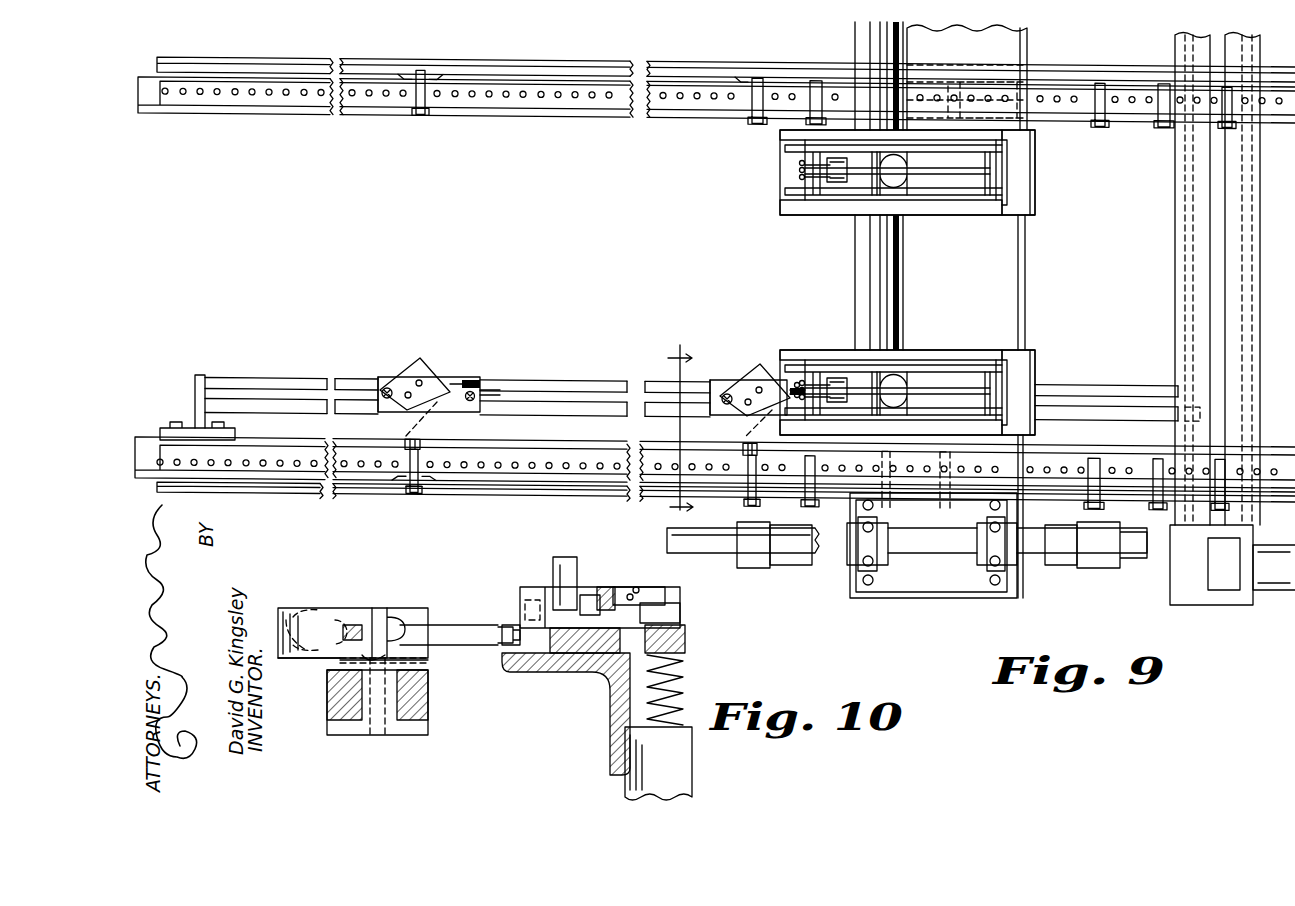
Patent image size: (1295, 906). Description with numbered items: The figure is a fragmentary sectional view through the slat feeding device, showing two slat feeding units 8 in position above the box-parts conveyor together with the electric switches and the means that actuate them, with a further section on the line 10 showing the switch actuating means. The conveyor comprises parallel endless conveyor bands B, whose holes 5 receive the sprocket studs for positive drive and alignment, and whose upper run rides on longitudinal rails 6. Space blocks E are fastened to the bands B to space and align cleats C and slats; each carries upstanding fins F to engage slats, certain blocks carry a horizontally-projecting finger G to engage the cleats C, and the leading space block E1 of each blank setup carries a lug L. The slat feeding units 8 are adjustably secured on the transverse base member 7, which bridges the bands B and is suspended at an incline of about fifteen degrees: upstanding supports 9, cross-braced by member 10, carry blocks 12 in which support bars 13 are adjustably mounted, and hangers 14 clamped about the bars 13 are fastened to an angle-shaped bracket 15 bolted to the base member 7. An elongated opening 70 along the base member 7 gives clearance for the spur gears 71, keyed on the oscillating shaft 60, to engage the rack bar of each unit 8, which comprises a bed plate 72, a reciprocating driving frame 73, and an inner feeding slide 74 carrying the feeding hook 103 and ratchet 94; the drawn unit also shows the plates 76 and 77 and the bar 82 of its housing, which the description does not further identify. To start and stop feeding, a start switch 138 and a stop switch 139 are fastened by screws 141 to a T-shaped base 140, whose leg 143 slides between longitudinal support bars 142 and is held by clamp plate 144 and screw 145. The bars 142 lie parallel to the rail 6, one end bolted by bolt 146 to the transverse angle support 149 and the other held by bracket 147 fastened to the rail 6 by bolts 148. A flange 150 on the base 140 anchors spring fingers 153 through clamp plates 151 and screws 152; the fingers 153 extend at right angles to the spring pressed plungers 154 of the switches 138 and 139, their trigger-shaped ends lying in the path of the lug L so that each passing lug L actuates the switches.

In FIG. 9, the holes 5 is at (508, 96).
In FIG. 9, the longitudinal rails 6 is at (660, 116).
In FIG. 10, the longitudinal rails 6 is at (522, 672).
In FIG. 9, the transverse base member 7 is at (1026, 278).
In FIG. 9, the slat feeding unit 8 is at (1036, 182).
In FIG. 9, the upstanding supports 9 is at (755, 570).
In FIG. 9, the cross-brace member 10 is at (685, 430).
In FIG. 9, the blocks 12 is at (792, 567).
In FIG. 9, the support bars 13 is at (705, 548).
In FIG. 9, the hangers 14 is at (978, 560).
In FIG. 9, the angle-shaped bracket 15 is at (932, 593).
In FIG. 9, the shaft 60 is at (884, 294).
In FIG. 9, the elongated opening 70 is at (868, 275).
In FIG. 9, the spur gears 71 is at (845, 200).
In FIG. 9, the bed plate 72 is at (1030, 205).
In FIG. 9, the reciprocating driving frame 73 is at (996, 208).
In FIG. 9, the inner feeding slide 74 is at (975, 190).
In FIG. 9, the plate 76 is at (781, 135).
In FIG. 9, the plate 77 is at (786, 148).
In FIG. 9, the bar 82 is at (1008, 150).
In FIG. 9, the ratchet 94 is at (860, 190).
In FIG. 9, the feeding hook 103 is at (908, 180).
In FIG. 9, the start switch 138 is at (750, 376).
In FIG. 10, the start switch 138 is at (412, 610).
In FIG. 9, the stop switch 139 is at (420, 366).
In FIG. 9, the T-shaped base 140 is at (380, 395).
In FIG. 10, the T-shaped base 140 is at (332, 670).
In FIG. 9, the screws 141 is at (418, 382).
In FIG. 10, the screws 141 is at (385, 610).
In FIG. 9, the longitudinal support bars 142 is at (590, 404).
In FIG. 10, the leg 143 is at (388, 718).
In FIG. 10, the clamp plate 144 is at (428, 728).
In FIG. 9, the screw 145 is at (470, 402).
In FIG. 10, the screw 145 is at (400, 666).
In FIG. 9, the bolt 146 is at (1190, 400).
In FIG. 9, the bracket 147 is at (194, 388).
In FIG. 9, the bolts 148 is at (172, 424).
In FIG. 9, the transverse angle support 149 is at (1178, 340).
In FIG. 9, the upwardly extending flange 150 is at (458, 380).
In FIG. 10, the upwardly extending flange 150 is at (325, 620).
In FIG. 9, the clamp plates 151 is at (488, 390).
In FIG. 10, the clamp plates 151 is at (352, 622).
In FIG. 9, the screws 152 is at (470, 382).
In FIG. 10, the screws 152 is at (290, 616).
In FIG. 9, the spring fingers 153 is at (398, 428).
In FIG. 10, the spring fingers 153 is at (448, 632).
In FIG. 10, the spring pressed plungers 154 is at (405, 656).
In FIG. 9, the conveyor bands B is at (576, 103).
In FIG. 10, the conveyor bands B is at (590, 660).
In FIG. 9, the cleats C is at (765, 68).
In FIG. 10, the cleats C is at (676, 613).
In FIG. 9, the space blocks E is at (824, 74).
In FIG. 9, the leading space block E1 is at (422, 490).
In FIG. 10, the leading space block E1 is at (592, 588).
In FIG. 9, the upstanding fins F is at (812, 75).
In FIG. 10, the upstanding fins F is at (555, 575).
In FIG. 9, the horizontally-projecting finger G is at (422, 70).
In FIG. 10, the horizontally-projecting finger G is at (650, 590).
In FIG. 9, the lug L is at (418, 438).
In FIG. 10, the lug L is at (508, 632).